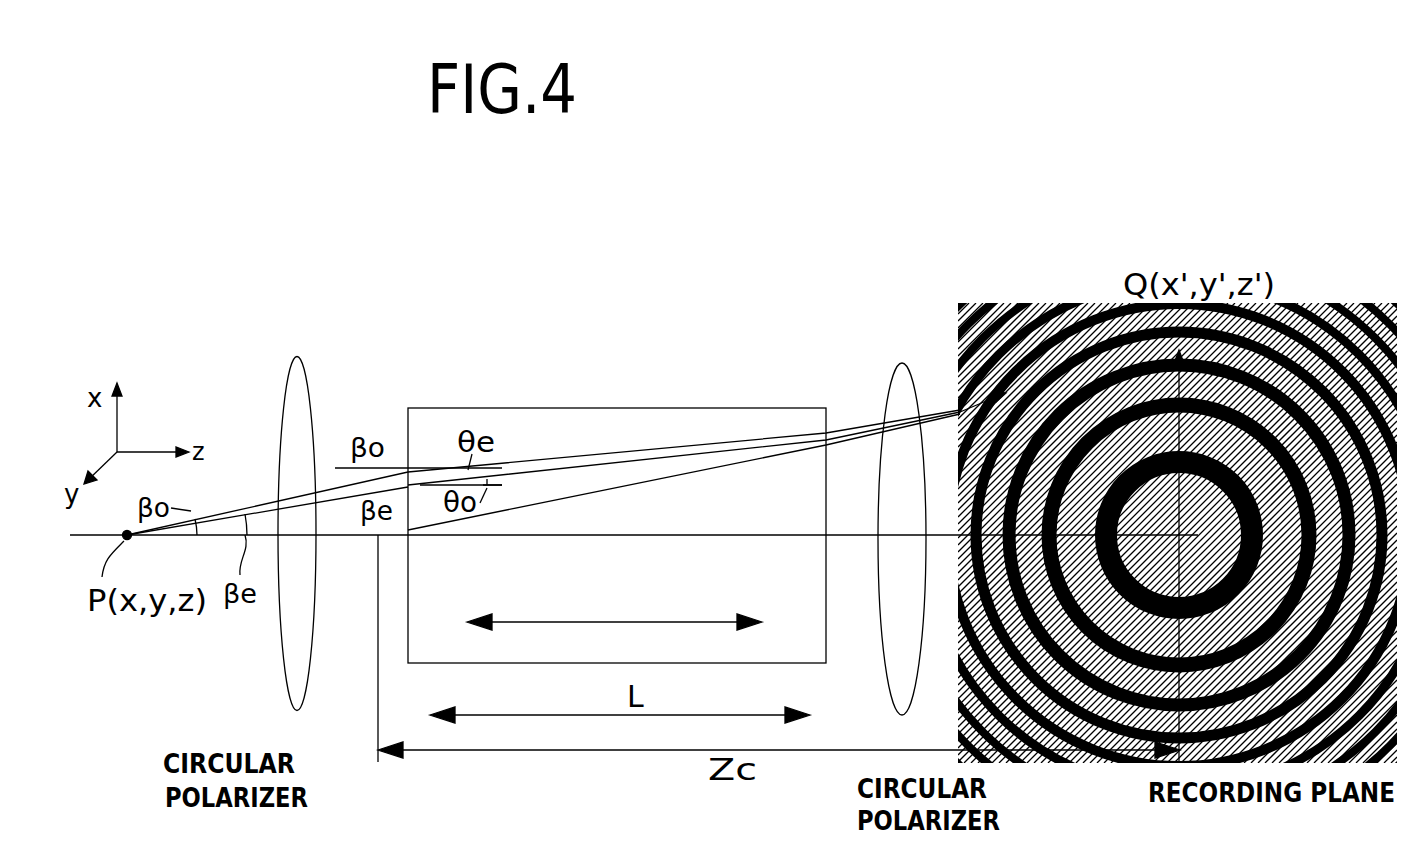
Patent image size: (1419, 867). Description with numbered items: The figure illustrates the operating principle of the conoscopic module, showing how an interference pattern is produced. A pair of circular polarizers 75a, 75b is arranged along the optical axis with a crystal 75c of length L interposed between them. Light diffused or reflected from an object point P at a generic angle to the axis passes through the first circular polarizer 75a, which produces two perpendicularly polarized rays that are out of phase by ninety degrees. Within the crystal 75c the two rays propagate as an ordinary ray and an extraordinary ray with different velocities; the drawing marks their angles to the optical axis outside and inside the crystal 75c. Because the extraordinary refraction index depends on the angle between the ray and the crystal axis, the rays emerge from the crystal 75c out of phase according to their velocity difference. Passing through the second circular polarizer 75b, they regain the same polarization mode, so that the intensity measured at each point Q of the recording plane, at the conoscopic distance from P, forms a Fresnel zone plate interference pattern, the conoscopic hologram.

The first circular polarizer 75a is at (295, 360).
The second circular polarizer 75b is at (898, 363).
The crystal 75c is at (610, 408).